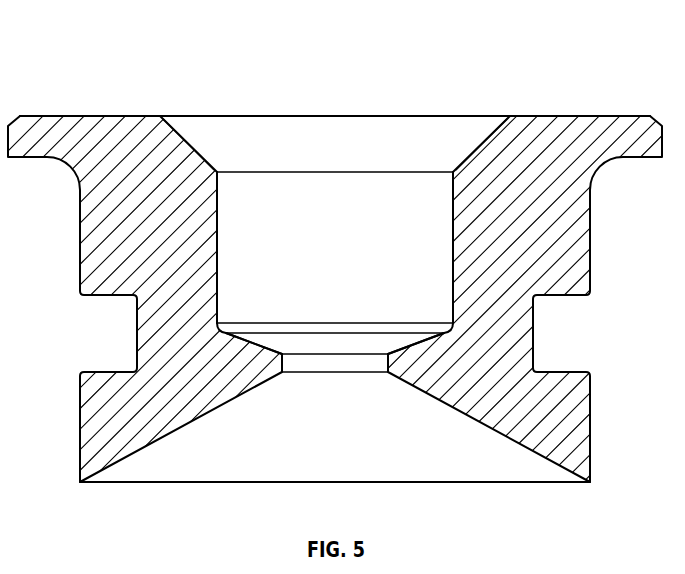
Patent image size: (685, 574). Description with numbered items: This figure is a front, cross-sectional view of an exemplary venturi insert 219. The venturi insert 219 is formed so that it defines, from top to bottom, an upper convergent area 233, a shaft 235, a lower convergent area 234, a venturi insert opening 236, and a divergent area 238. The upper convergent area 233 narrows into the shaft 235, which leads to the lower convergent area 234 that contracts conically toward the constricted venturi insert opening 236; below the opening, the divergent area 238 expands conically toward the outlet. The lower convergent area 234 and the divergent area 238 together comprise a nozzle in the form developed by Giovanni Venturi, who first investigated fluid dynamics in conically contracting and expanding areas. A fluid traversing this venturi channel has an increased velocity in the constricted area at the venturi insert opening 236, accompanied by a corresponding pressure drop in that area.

The venturi insert 219 is at (342, 274).
The upper convergent area 233 is at (245, 131).
The lower convergent area 234 is at (242, 335).
The shaft 235 is at (453, 192).
The venturi insert opening 236 is at (352, 363).
The divergent area 238 is at (215, 467).